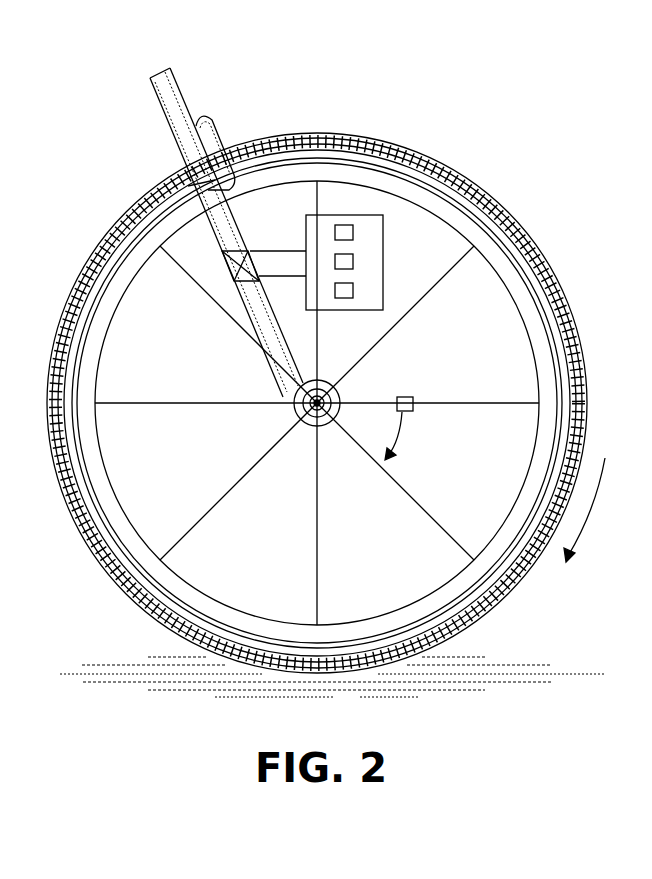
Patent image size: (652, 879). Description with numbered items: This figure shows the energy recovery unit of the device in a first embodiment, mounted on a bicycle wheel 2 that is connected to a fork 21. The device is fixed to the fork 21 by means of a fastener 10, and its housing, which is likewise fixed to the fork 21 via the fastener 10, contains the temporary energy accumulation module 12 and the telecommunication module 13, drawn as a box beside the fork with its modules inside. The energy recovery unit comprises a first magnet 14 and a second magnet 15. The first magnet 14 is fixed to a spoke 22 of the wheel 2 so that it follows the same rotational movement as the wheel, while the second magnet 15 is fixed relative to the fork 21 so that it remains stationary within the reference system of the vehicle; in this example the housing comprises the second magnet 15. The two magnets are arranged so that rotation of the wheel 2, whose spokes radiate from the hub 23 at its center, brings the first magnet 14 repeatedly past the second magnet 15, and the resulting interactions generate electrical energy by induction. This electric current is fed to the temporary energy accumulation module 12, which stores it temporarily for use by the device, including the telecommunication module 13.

The wheel 2 is at (84, 245).
The fastener 10 is at (232, 278).
The temporary energy accumulation module 12 is at (353, 262).
The telecommunication module 13 is at (347, 225).
The first magnet 14 is at (408, 412).
The second magnet 15 is at (355, 293).
The fork 21 is at (187, 97).
The spoke 22 is at (218, 500).
The hub 23 is at (323, 426).